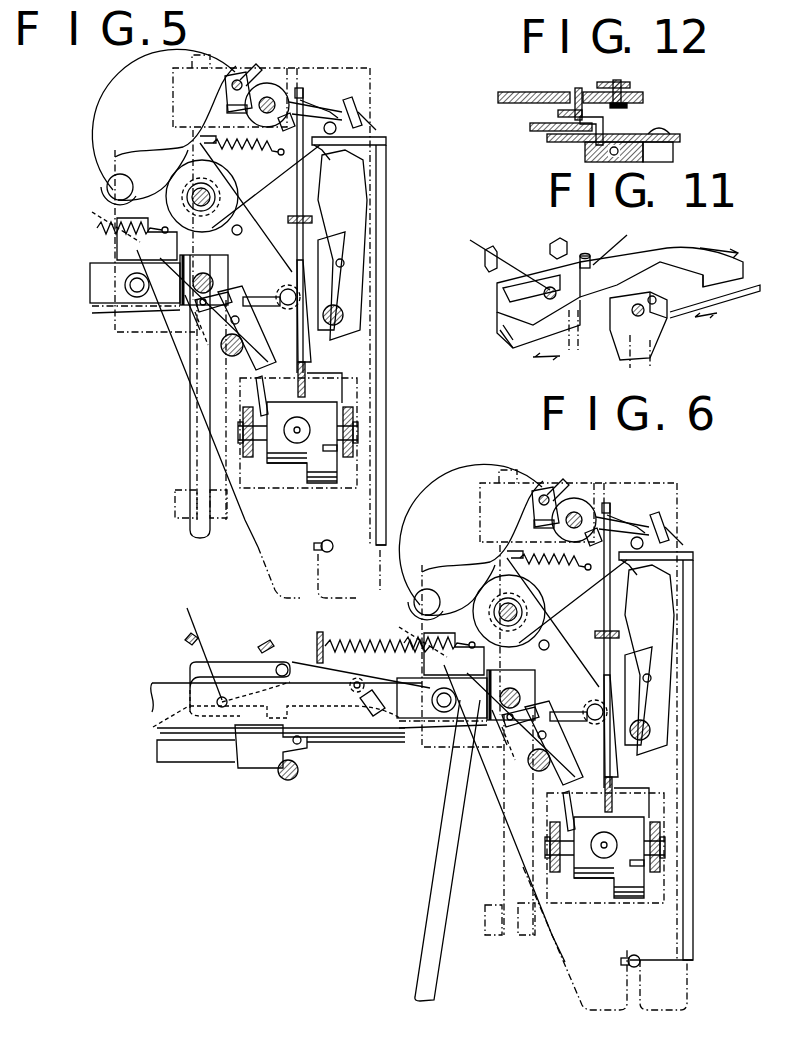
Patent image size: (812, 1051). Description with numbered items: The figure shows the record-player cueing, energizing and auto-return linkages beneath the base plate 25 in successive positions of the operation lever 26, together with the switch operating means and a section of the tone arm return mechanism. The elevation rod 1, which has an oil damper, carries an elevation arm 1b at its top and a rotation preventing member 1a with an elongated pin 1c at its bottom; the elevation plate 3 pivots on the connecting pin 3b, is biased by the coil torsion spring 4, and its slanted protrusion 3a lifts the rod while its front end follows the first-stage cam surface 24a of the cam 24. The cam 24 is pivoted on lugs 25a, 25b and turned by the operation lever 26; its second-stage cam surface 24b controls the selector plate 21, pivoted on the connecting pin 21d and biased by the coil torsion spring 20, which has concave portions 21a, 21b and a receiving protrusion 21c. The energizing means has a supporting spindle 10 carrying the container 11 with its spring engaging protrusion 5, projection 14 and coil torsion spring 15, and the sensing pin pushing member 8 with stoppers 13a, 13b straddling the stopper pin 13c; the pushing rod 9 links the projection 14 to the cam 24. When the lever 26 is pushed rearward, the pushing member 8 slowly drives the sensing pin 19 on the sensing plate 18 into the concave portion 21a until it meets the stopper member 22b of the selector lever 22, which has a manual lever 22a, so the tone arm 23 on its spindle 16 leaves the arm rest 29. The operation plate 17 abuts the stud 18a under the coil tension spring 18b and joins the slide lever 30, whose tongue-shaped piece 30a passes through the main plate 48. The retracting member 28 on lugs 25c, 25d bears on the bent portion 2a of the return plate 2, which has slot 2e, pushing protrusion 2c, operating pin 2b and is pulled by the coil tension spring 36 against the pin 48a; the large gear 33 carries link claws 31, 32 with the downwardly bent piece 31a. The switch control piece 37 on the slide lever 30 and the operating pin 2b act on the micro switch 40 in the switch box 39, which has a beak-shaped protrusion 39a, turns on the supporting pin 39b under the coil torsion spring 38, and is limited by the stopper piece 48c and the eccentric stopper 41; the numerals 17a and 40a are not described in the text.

In FIG. 5, the elevation rod 1 is at (185, 300).
In FIG. 6, the elevation rod 1 is at (493, 732).
In FIG. 5, the rotation preventing member 1a is at (195, 333).
In FIG. 6, the rotation preventing member 1a is at (490, 764).
In FIG. 5, the elevation arm 1b is at (92, 210).
In FIG. 6, the elevation arm 1b is at (407, 625).
In FIG. 5, the elongated pin 1c is at (203, 306).
In FIG. 6, the elongated pin 1c is at (541, 700).
In FIG. 6, the return plate 2 is at (167, 690).
In FIG. 12, the return plate 2 is at (540, 131).
In FIG. 5, the bent portion 2a is at (190, 308).
In FIG. 6, the bent portion 2a is at (485, 742).
In FIG. 6, the operating pin 2b is at (383, 654).
In FIG. 5, the pushing protrusion 2c is at (107, 193).
In FIG. 6, the pushing protrusion 2c is at (408, 594).
In FIG. 5, the longitudinally extending slot 2e is at (93, 312).
In FIG. 6, the longitudinally extending slot 2e is at (418, 765).
In FIG. 5, the elevation plate 3 is at (215, 445).
In FIG. 6, the elevation plate 3 is at (504, 813).
In FIG. 5, the slanted protrusion 3a is at (210, 380).
In FIG. 6, the slanted protrusion 3a is at (497, 825).
In FIG. 5, the connecting pin 3b is at (242, 352).
In FIG. 6, the connecting pin 3b is at (554, 766).
In FIG. 5, the coil torsion spring 4 is at (270, 306).
In FIG. 6, the coil torsion spring 4 is at (578, 739).
In FIG. 5, the spring engaging protrusion 5 is at (335, 110).
In FIG. 6, the spring engaging protrusion 5 is at (668, 502).
In FIG. 5, the sensing pin pushing member 8 is at (376, 130).
In FIG. 6, the sensing pin pushing member 8 is at (698, 532).
In FIG. 5, the pushing rod 9 is at (305, 118).
In FIG. 6, the pushing rod 9 is at (669, 624).
In FIG. 5, the supporting spindle 10 is at (325, 105).
In FIG. 6, the supporting spindle 10 is at (643, 491).
In FIG. 5, the container 11 is at (300, 90).
In FIG. 6, the container 11 is at (622, 612).
In FIG. 5, the stopper 13a is at (237, 80).
In FIG. 6, the stopper 13a is at (523, 470).
In FIG. 5, the stopper 13b is at (268, 84).
In FIG. 6, the stopper 13b is at (578, 489).
In FIG. 5, the stopper pin 13c is at (251, 66).
In FIG. 6, the stopper pin 13c is at (557, 481).
In FIG. 5, the projection 14 is at (365, 120).
In FIG. 6, the projection 14 is at (693, 495).
In FIG. 5, the coil torsion spring 15 is at (350, 118).
In FIG. 6, the coil torsion spring 15 is at (666, 514).
In FIG. 5, the tone arm spindle 16 is at (192, 188).
In FIG. 6, the tone arm spindle 16 is at (483, 564).
In FIG. 5, the operation plate 17 is at (255, 205).
In FIG. 6, the operation plate 17 is at (547, 667).
In FIG. 5, the pin 17a is at (242, 235).
In FIG. 6, the pin 17a is at (568, 656).
In FIG. 5, the sensing plate 18 is at (318, 150).
In FIG. 6, the sensing plate 18 is at (634, 567).
In FIG. 5, the stud 18a is at (115, 172).
In FIG. 6, the stud 18a is at (441, 645).
In FIG. 5, the coil tension spring 18b is at (245, 159).
In FIG. 6, the coil tension spring 18b is at (552, 574).
In FIG. 5, the sensing pin 19 is at (388, 139).
In FIG. 6, the sensing pin 19 is at (681, 554).
In FIG. 5, the coil torsion spring 20 is at (345, 295).
In FIG. 6, the coil torsion spring 20 is at (684, 696).
In FIG. 5, the selector plate 21 is at (362, 272).
In FIG. 6, the selector plate 21 is at (685, 660).
In FIG. 5, the first concave portion 21a is at (345, 153).
In FIG. 6, the first concave portion 21a is at (704, 580).
In FIG. 5, the concave portion 21b is at (360, 200).
In FIG. 6, the concave portion 21b is at (712, 624).
In FIG. 5, the receiving protrusion 21c is at (350, 250).
In FIG. 6, the receiving protrusion 21c is at (706, 670).
In FIG. 5, the connecting pin 21d is at (344, 315).
In FIG. 6, the connecting pin 21d is at (694, 734).
In FIG. 5, the selector lever 22 is at (387, 400).
In FIG. 6, the selector lever 22 is at (711, 721).
In FIG. 5, the manual lever 22a is at (328, 540).
In FIG. 6, the manual lever 22a is at (645, 945).
In FIG. 5, the stopper member 22b is at (360, 180).
In FIG. 6, the stopper member 22b is at (712, 602).
In FIG. 5, the tone arm 23 is at (190, 482).
In FIG. 6, the tone arm 23 is at (440, 948).
In FIG. 5, the cam 24 is at (330, 430).
In FIG. 6, the cam 24 is at (645, 848).
In FIG. 5, the first-stage cam surface 24a is at (253, 425).
In FIG. 6, the first-stage cam surface 24a is at (509, 854).
In FIG. 5, the second-stage cam surface 24b is at (345, 395).
In FIG. 6, the second-stage cam surface 24b is at (687, 820).
In FIG. 5, the base plate 25 is at (148, 97).
In FIG. 6, the base plate 25 is at (536, 534).
In FIG. 5, the lug 25a is at (243, 450).
In FIG. 6, the lug 25a is at (509, 855).
In FIG. 5, the lug 25b is at (358, 420).
In FIG. 6, the lug 25b is at (705, 844).
In FIG. 5, the lug 25c is at (117, 238).
In FIG. 6, the lug 25c is at (434, 700).
In FIG. 5, the lug 25d is at (120, 333).
In FIG. 6, the lug 25d is at (443, 777).
In FIG. 5, the operation lever 26 is at (297, 445).
In FIG. 6, the operation lever 26 is at (598, 882).
In FIG. 5, the retracting member 28 is at (422, 230).
In FIG. 6, the retracting member 28 is at (729, 645).
In FIG. 5, the arm rest 29 is at (175, 514).
In FIG. 6, the arm rest 29 is at (527, 935).
In FIG. 6, the slide lever 30 is at (190, 762).
In FIG. 11, the slide lever 30 is at (735, 300).
In FIG. 12, the tongue-shaped piece 30a is at (605, 124).
In FIG. 12, the link claw 31 is at (640, 100).
In FIG. 12, the downwardly bent piece 31a is at (558, 115).
In FIG. 12, the link claw 32 is at (630, 84).
In FIG. 12, the large gear 33 is at (555, 92).
In FIG. 5, the coil tension spring 36 is at (97, 228).
In FIG. 6, the coil tension spring 36 is at (384, 621).
In FIG. 6, the switch control piece 37 is at (250, 758).
In FIG. 6, the coil torsion spring 38 is at (185, 620).
In FIG. 11, the coil torsion spring 38 is at (515, 262).
In FIG. 6, the switch box 39 is at (233, 662).
In FIG. 11, the switch box 39 is at (537, 268).
In FIG. 6, the beak-shaped protrusion 39a is at (390, 707).
In FIG. 11, the beak-shaped protrusion 39a is at (700, 256).
In FIG. 6, the supporting pin 39b is at (155, 727).
In FIG. 11, the supporting pin 39b is at (535, 348).
In FIG. 6, the micro switch 40 is at (243, 675).
In FIG. 11, the micro switch 40 is at (585, 268).
In FIG. 6, the slot 40a is at (310, 690).
In FIG. 6, the eccentric stopper 41 is at (283, 778).
In FIG. 11, the eccentric stopper 41 is at (650, 370).
In FIG. 12, the main plate 48 is at (680, 138).
In FIG. 5, the pin 48a is at (125, 285).
In FIG. 6, the pin 48a is at (460, 729).
In FIG. 6, the stopper piece 48c is at (272, 645).
In FIG. 11, the stopper piece 48c is at (567, 243).